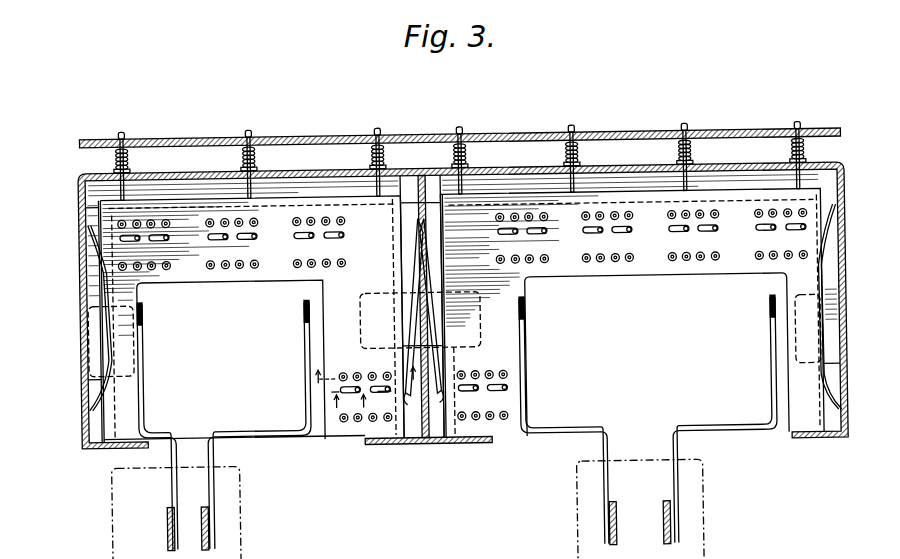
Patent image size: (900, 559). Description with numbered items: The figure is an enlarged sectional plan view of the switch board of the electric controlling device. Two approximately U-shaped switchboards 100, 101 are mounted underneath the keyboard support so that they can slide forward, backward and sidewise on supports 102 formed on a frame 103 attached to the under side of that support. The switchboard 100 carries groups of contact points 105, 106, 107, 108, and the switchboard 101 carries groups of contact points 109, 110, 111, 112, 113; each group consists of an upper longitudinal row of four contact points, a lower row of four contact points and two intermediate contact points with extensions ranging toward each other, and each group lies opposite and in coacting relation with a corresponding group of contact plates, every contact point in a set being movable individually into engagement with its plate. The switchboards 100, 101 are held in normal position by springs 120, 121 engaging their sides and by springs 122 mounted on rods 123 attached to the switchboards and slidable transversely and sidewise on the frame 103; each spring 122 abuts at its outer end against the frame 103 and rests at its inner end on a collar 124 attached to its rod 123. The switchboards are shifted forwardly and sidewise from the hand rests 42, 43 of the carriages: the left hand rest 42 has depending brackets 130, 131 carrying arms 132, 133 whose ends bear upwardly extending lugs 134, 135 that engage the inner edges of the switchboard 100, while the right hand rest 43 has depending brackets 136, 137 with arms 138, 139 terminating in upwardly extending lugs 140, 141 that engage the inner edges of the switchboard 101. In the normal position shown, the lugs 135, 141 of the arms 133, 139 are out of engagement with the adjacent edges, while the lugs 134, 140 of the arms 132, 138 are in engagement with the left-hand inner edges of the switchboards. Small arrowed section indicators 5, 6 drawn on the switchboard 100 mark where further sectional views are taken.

The switchboard 100 is at (204, 276).
The switchboard 101 is at (664, 268).
The supports 102 is at (335, 185).
The frame 103 is at (524, 174).
The group of contact points 105 is at (356, 410).
The group of contact points 106 is at (319, 242).
The group of contact points 107 is at (232, 243).
The group of contact points 108 is at (144, 245).
The group of contact points 109 is at (482, 395).
The group of contact points 110 is at (522, 238).
The group of contact points 111 is at (608, 236).
The group of contact points 112 is at (694, 235).
The group of contact points 113 is at (781, 234).
The spring 120 is at (97, 252).
The spring 121 is at (401, 243).
The spring 122 is at (131, 157).
The rod 123 is at (127, 130).
The collar 124 is at (259, 167).
The depending bracket 130 is at (165, 523).
The depending bracket 131 is at (207, 522).
The arm 132 is at (144, 410).
The arm 133 is at (304, 405).
The lug 134 is at (146, 314).
The lug 135 is at (303, 308).
The depending bracket 136 is at (599, 524).
The depending bracket 137 is at (669, 518).
The arm 138 is at (526, 398).
The arm 139 is at (770, 397).
The lug 140 is at (527, 317).
The lug 141 is at (769, 310).
The hand rest 42 is at (192, 512).
The hand rest 43 is at (656, 509).
The section line 5 is at (357, 380).
The section line 6 is at (353, 401).